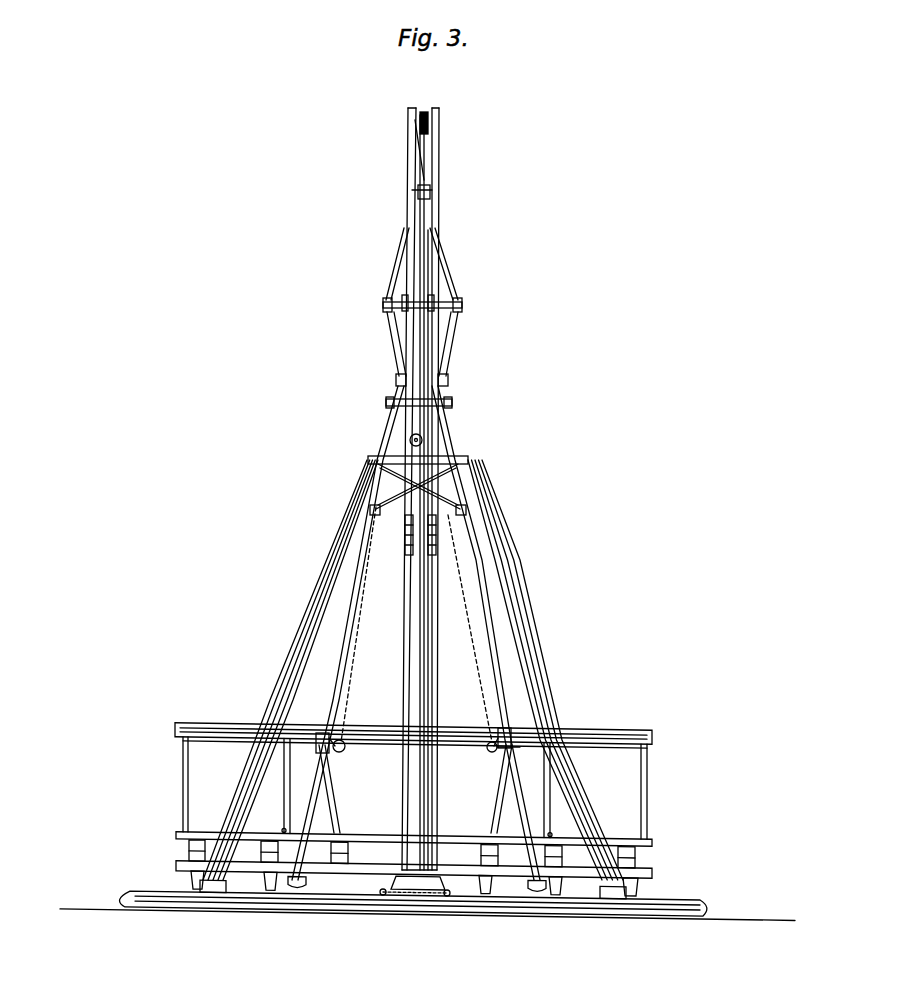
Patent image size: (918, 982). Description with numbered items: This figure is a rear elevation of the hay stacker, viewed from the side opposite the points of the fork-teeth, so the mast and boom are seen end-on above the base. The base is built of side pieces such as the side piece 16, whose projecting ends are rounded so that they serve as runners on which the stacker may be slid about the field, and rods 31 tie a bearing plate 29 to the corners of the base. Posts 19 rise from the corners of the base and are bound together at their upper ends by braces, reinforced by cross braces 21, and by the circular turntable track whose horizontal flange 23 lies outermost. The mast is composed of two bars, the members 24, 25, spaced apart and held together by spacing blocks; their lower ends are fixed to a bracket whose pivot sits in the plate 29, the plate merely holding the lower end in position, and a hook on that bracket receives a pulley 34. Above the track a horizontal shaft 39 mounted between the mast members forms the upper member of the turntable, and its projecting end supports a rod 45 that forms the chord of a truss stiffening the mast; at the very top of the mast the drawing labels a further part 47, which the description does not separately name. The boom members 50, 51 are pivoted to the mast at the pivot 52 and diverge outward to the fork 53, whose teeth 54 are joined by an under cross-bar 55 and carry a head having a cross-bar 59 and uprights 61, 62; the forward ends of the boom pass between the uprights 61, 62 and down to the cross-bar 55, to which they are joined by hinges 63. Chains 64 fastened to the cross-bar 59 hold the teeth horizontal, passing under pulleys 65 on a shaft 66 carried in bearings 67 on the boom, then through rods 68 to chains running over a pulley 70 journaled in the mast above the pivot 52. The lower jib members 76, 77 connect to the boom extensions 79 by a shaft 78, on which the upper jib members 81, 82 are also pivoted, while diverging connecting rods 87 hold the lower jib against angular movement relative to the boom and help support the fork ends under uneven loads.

The side piece of the base 16 is at (122, 895).
The posts 19 is at (300, 653).
The cross braces 21 is at (395, 494).
The horizontal flange of the track 23 is at (470, 461).
The member of the mast 24 is at (410, 667).
The member of the mast 25 is at (425, 671).
The plate 29 is at (410, 896).
The rods 31 is at (248, 888).
The pulley 34 is at (425, 897).
The horizontal shaft 39 is at (423, 444).
The rod 45 is at (430, 196).
The top pulley block 47 is at (423, 115).
The member of the boom 50 is at (392, 419).
The member of the boom 51 is at (458, 417).
The pivot of the boom 52 is at (450, 401).
The fork 53 is at (184, 836).
The teeth 54 is at (197, 891).
The under cross-bar 55 is at (192, 868).
The cross-bar of the head 59 is at (598, 736).
The upright 61 is at (284, 816).
The upright 62 is at (337, 826).
The hinges 63 is at (298, 889).
The chains 64 is at (396, 716).
The pulleys 65 is at (496, 742).
The shaft 66 is at (490, 755).
The bearings 67 is at (321, 738).
The rods 68 is at (365, 547).
The pulley 70 is at (400, 297).
The member of the lower jib 76 is at (390, 344).
The member of the lower jib 77 is at (455, 344).
The shaft 78 is at (446, 322).
The extensions of the boom 79 is at (400, 349).
The member of the upper jib 81 is at (403, 262).
The member of the upper jib 82 is at (437, 264).
The diverging connecting rods 87 is at (362, 610).